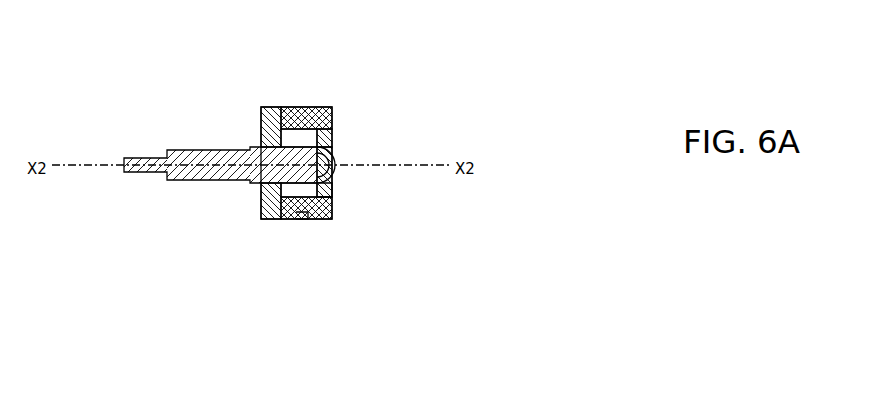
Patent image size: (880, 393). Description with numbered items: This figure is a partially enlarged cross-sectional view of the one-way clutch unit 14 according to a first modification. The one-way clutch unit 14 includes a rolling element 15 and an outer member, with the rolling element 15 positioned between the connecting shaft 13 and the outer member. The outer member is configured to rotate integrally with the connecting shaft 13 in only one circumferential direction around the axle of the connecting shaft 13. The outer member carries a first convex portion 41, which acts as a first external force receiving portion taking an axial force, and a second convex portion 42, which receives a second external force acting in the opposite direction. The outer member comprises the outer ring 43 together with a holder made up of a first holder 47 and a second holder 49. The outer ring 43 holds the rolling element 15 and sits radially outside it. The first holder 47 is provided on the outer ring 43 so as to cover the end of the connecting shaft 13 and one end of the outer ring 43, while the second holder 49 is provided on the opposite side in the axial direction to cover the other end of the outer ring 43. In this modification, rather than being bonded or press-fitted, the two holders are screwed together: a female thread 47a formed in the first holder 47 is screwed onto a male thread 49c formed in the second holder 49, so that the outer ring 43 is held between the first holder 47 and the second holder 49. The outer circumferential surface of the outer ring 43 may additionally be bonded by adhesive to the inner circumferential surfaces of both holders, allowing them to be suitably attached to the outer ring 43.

The connecting shaft 13 is at (192, 142).
The one-way clutch unit 14 is at (299, 105).
The second convex portion 42 is at (261, 116).
The outer ring 43 is at (305, 107).
The rolling element 15 is at (333, 137).
The first convex portion 41 is at (336, 156).
The first holder 47 is at (333, 200).
The female thread 47a is at (332, 199).
The second holder 49 is at (262, 197).
The male thread 49c is at (302, 219).